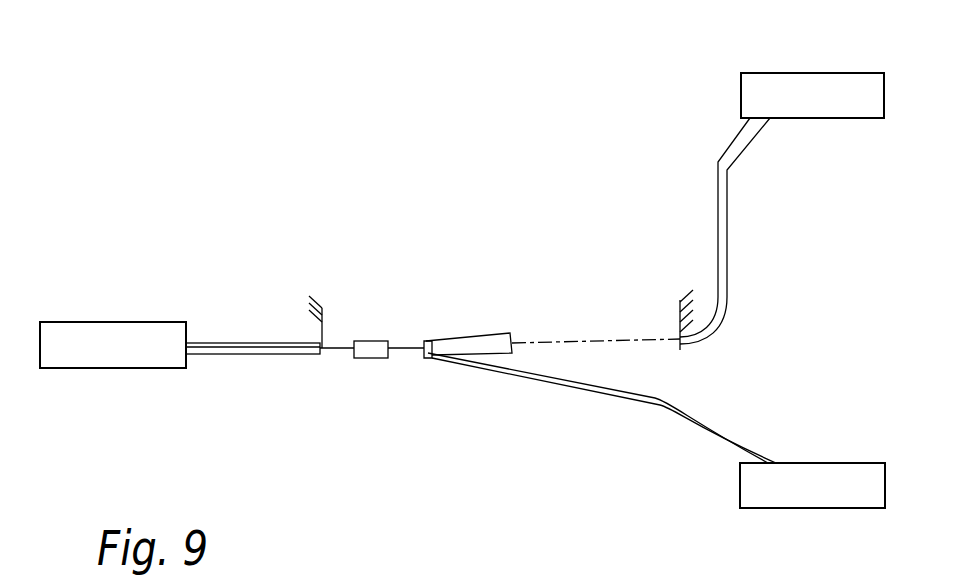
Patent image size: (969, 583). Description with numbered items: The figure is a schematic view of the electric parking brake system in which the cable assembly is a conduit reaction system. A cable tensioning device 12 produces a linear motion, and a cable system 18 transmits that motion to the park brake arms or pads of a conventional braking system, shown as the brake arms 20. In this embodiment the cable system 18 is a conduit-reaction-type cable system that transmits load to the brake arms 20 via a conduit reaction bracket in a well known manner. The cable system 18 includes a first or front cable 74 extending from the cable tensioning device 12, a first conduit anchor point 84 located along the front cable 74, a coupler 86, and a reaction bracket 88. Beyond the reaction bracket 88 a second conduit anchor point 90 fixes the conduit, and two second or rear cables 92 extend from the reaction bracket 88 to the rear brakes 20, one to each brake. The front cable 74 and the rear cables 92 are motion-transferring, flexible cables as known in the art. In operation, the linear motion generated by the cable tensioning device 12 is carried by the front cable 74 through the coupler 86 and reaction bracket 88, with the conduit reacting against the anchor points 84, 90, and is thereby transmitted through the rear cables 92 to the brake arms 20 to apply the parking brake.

The cable tensioning device 12 is at (110, 322).
The first or front cable 74 is at (254, 342).
The first conduit anchor point 84 is at (323, 332).
The coupler 86 is at (370, 359).
The reaction bracket 88 is at (437, 339).
The second conduit anchor point 90 is at (680, 323).
The second or rear cables 92 is at (728, 223).
The brake arms 20 is at (786, 72).
The cable system 18 is at (338, 448).